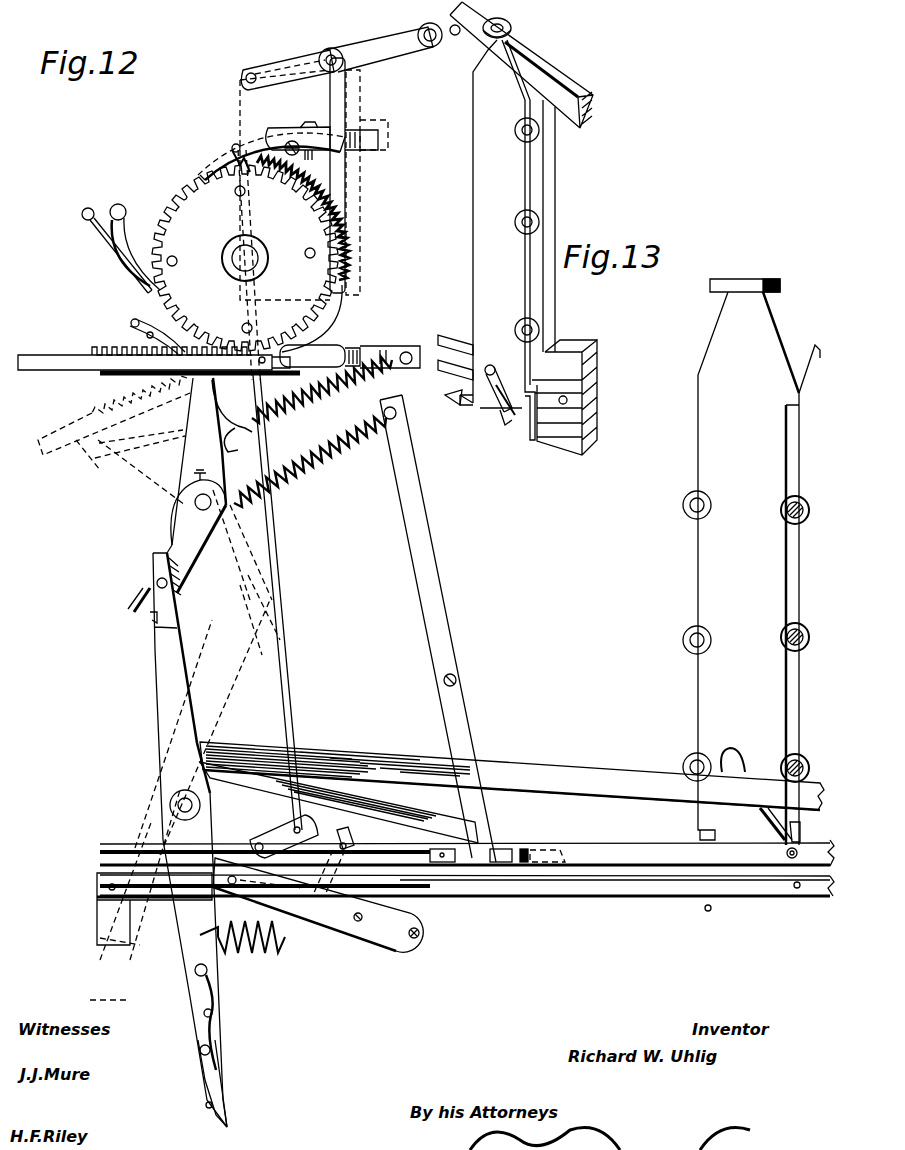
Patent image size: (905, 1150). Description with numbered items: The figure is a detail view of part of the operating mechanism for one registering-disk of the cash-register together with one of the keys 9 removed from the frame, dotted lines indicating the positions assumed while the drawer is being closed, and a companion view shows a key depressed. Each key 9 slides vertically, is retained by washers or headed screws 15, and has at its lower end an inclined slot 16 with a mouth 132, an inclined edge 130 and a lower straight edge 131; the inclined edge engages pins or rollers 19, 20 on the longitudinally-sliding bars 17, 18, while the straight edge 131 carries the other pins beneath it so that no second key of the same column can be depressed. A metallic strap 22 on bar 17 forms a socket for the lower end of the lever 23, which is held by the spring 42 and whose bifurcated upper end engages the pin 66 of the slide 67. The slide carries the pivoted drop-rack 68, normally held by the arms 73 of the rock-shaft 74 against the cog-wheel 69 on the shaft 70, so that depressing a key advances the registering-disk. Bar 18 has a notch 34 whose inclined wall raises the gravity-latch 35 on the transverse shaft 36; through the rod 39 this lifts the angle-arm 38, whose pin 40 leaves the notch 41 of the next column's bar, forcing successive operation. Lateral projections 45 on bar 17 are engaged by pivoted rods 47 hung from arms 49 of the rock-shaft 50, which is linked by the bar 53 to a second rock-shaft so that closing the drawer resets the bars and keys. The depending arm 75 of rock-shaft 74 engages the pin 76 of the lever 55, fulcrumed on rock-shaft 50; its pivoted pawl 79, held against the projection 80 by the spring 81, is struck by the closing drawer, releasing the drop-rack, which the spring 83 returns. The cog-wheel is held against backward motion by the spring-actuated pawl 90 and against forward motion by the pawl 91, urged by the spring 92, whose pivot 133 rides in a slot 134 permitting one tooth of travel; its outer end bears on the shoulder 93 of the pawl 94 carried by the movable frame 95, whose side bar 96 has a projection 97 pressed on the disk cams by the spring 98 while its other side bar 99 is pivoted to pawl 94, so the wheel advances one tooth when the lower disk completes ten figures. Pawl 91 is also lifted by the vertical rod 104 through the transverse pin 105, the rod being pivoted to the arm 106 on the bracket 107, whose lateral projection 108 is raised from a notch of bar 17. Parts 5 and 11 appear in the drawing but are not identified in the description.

In FIG. 12, the pulley 5 is at (521, 65).
In FIG. 12, the keys 9 is at (496, 222).
In FIG. 13, the keys 9 is at (759, 559).
In FIG. 12, the bracket 11 is at (556, 328).
In FIG. 12, the washers or headed screws 15 is at (515, 220).
In FIG. 13, the washers or headed screws 15 is at (780, 638).
In FIG. 12, the inclined slots 16 is at (500, 408).
In FIG. 13, the inclined slots 16 is at (764, 812).
In FIG. 12, the longitudinally-sliding bar 17 is at (587, 410).
In FIG. 12, the longitudinally-sliding bar 18 is at (585, 432).
In FIG. 12, the pins or rollers 19 is at (560, 404).
In FIG. 13, the pins or rollers 19 is at (790, 858).
In FIG. 12, the pins or rollers 20 is at (470, 402).
In FIG. 13, the pins or rollers 20 is at (797, 888).
In FIG. 12, the metallic strap 22 is at (526, 856).
In FIG. 12, the lever 23 is at (414, 478).
In FIG. 12, the notch 34 is at (245, 882).
In FIG. 12, the gravity-latch 35 is at (330, 918).
In FIG. 12, the transverse shaft 36 is at (425, 936).
In FIG. 12, the angle-arm 38 is at (341, 835).
In FIG. 12, the rod 39 is at (357, 921).
In FIG. 12, the pin 40 is at (350, 842).
In FIG. 12, the notch 41 is at (328, 899).
In FIG. 12, the spring 42 is at (326, 430).
In FIG. 12, the lateral projections 45 is at (568, 848).
In FIG. 12, the pivoted rods 47 is at (405, 816).
In FIG. 12, the arms 49 is at (185, 775).
In FIG. 12, the rock-shaft 50 is at (170, 805).
In FIG. 12, the bar 53 is at (541, 770).
In FIG. 12, the lever 55 is at (156, 660).
In FIG. 12, the pin 66 is at (410, 345).
In FIG. 12, the slide 67 is at (363, 348).
In FIG. 12, the drop-rack 68 is at (159, 355).
In FIG. 12, the cog-wheel 69 is at (245, 258).
In FIG. 12, the shaft 70 is at (233, 251).
In FIG. 12, the arms 73 is at (200, 430).
In FIG. 12, the rock-shaft 74 is at (195, 503).
In FIG. 12, the depending arm 75 is at (165, 552).
In FIG. 12, the pin 76 is at (157, 583).
In FIG. 12, the pivoted pawl 79 is at (200, 1070).
In FIG. 12, the projection 80 is at (201, 1118).
In FIG. 12, the spring 81 is at (200, 1012).
In FIG. 12, the spring 83 is at (242, 949).
In FIG. 12, the spring-actuated pawl 90 is at (122, 206).
In FIG. 12, the pawl 91 is at (230, 150).
In FIG. 12, the spring 92 is at (292, 208).
In FIG. 12, the shoulder or projection 93 is at (345, 118).
In FIG. 12, the pawl 94 is at (348, 242).
In FIG. 12, the movable frame 95 is at (312, 50).
In FIG. 12, the side bar 96 is at (285, 193).
In FIG. 12, the lateral projection 97 is at (262, 72).
In FIG. 12, the spring 98 is at (452, 24).
In FIG. 12, the side bar 99 is at (424, 28).
In FIG. 12, the vertical rod 104 is at (272, 528).
In FIG. 12, the transverse pin or bar 105 is at (238, 145).
In FIG. 12, the arm 106 is at (258, 843).
In FIG. 12, the bracket 107 is at (98, 918).
In FIG. 12, the lateral projection 108 is at (262, 845).
In FIG. 12, the inclined edges 130 is at (506, 394).
In FIG. 13, the inclined edges 130 is at (746, 775).
In FIG. 12, the lower straight edges 131 is at (508, 418).
In FIG. 13, the lower straight edges 131 is at (759, 854).
In FIG. 12, the mouths or openings 132 is at (527, 442).
In FIG. 13, the mouths or openings 132 is at (800, 835).
In FIG. 12, the pivot 133 is at (285, 145).
In FIG. 12, the slot 134 is at (298, 140).